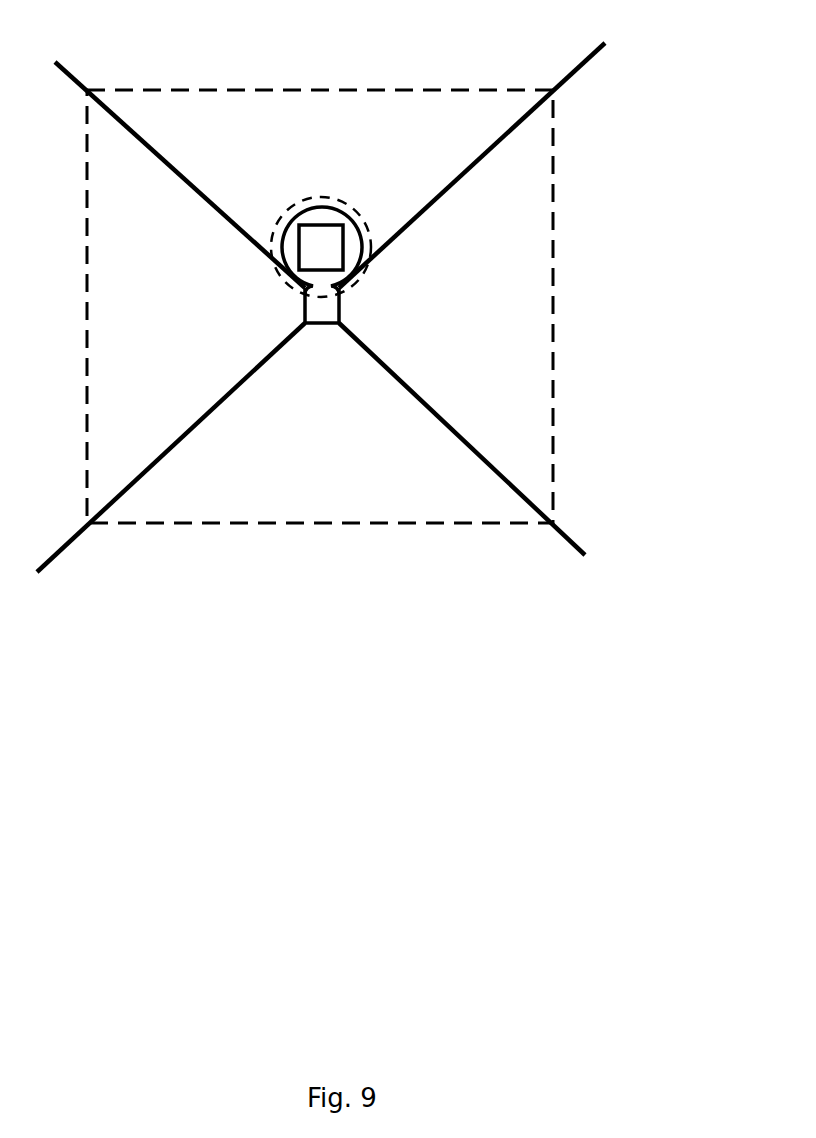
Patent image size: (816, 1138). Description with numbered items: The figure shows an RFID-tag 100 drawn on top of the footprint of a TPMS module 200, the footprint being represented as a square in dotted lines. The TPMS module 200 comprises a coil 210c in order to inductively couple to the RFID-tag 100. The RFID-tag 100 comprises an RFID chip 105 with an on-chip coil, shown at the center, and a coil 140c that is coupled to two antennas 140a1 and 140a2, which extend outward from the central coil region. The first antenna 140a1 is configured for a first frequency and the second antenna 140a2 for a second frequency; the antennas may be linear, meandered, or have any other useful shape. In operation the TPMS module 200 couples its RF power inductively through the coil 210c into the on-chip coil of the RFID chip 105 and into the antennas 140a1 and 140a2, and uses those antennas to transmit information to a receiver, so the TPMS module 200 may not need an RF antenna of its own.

The RFID-tag 100 is at (262, 432).
The RFID chip 105 is at (312, 235).
The first antenna 140a1 is at (595, 60).
The second antenna 140a2 is at (70, 68).
The coil 140c is at (347, 210).
The TPMS module 200 is at (432, 525).
The coil 210c is at (323, 198).